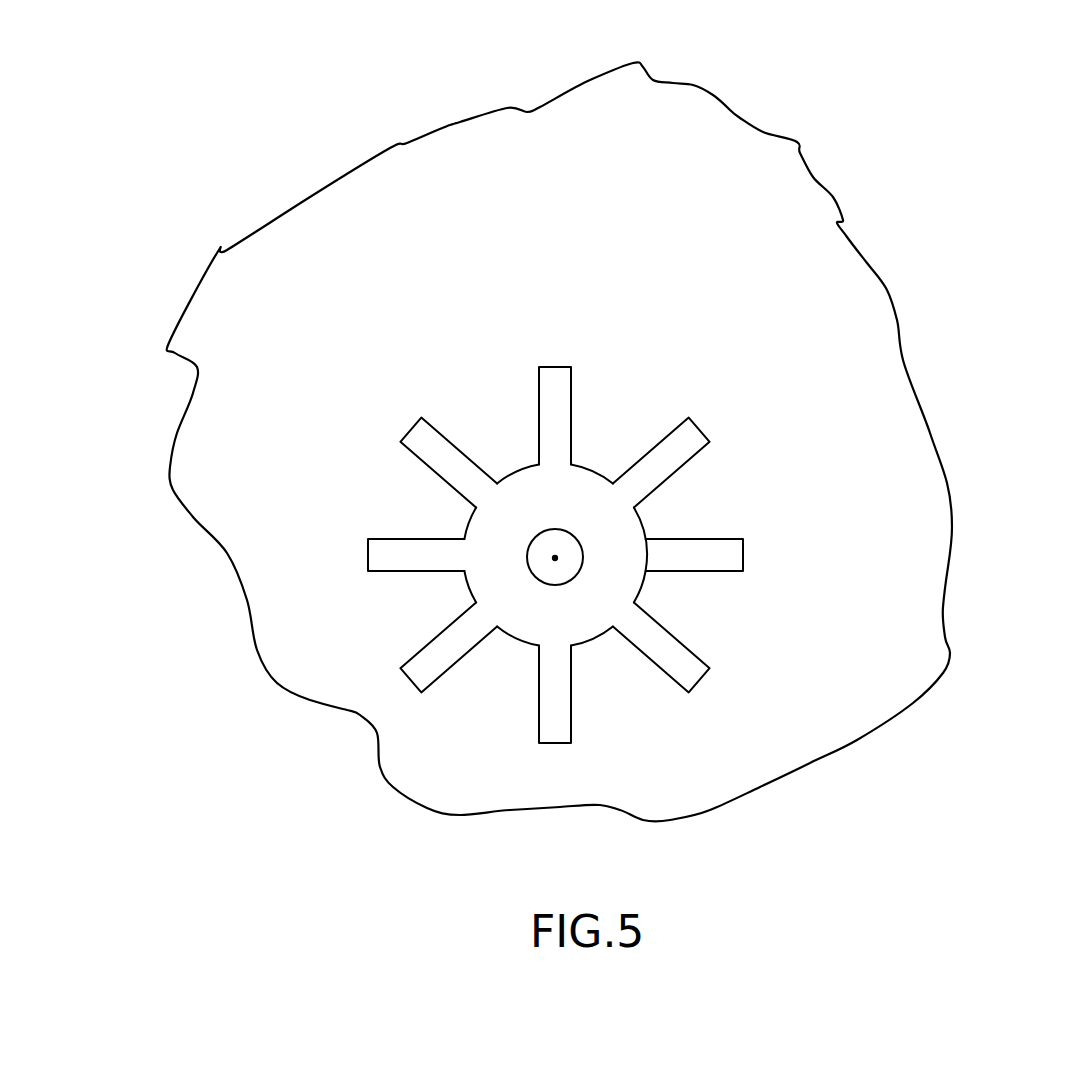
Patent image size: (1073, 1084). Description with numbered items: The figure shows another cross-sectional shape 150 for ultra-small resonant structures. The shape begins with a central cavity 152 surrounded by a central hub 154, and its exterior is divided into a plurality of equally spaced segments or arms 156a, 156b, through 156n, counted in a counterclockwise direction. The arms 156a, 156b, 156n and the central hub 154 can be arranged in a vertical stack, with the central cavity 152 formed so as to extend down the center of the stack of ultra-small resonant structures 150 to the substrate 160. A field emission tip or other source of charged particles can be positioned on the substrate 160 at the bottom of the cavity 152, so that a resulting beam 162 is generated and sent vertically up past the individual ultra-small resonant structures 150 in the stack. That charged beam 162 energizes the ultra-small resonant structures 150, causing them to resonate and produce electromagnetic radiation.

The cross-sectional shape 150 is at (587, 453).
The central cavity 152 is at (538, 577).
The central hub 154 is at (493, 578).
The arm 156a is at (737, 552).
The arm 156b is at (700, 670).
The arm 156n is at (700, 427).
The substrate 160 is at (903, 450).
The beam 162 is at (555, 558).